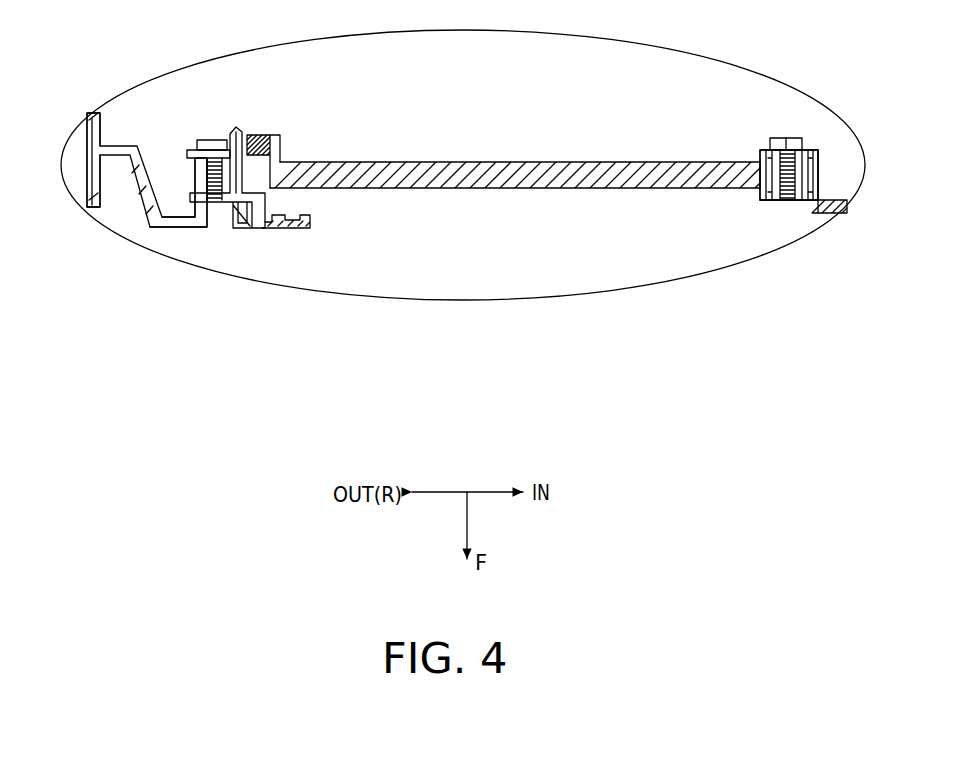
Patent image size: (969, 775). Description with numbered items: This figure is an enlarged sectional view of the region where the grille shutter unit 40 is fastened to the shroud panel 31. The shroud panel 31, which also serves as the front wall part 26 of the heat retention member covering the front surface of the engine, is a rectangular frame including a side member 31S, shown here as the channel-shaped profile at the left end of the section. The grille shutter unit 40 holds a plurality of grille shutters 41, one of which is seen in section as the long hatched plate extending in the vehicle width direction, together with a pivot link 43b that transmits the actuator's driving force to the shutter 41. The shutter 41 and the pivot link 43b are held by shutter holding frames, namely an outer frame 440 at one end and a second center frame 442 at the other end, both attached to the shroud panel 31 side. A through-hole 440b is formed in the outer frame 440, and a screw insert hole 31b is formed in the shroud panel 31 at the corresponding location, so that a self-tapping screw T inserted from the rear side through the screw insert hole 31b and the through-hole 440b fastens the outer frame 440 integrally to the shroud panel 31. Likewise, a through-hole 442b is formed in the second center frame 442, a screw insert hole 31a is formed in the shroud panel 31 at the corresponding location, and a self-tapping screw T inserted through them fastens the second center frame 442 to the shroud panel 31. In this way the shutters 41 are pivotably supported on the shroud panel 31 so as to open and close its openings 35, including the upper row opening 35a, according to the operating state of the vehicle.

The shroud panel 31 is at (830, 216).
The front wall part 26 is at (493, 252).
The side member 31S is at (87, 148).
The screw insert hole 31a is at (800, 206).
The screw insert hole 31b is at (219, 153).
The self-tapping screw T is at (192, 149).
The grille shutter unit 40 is at (397, 240).
The grille shutter 41 is at (497, 160).
The pivot link 43b is at (281, 145).
The outer frame 440 is at (240, 126).
The through-hole 440b is at (220, 138).
The second center frame 442 is at (759, 148).
The through-hole 442b is at (783, 137).
The upper row opening 35a is at (563, 260).
The opening 35 is at (630, 280).